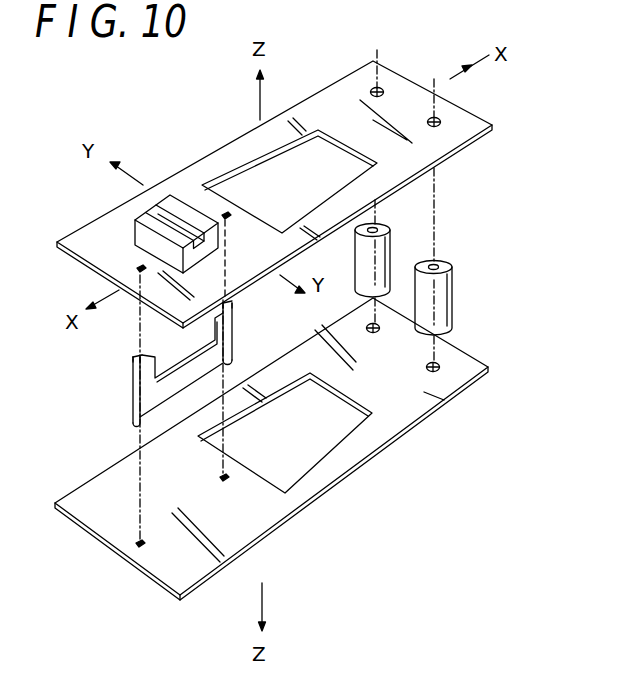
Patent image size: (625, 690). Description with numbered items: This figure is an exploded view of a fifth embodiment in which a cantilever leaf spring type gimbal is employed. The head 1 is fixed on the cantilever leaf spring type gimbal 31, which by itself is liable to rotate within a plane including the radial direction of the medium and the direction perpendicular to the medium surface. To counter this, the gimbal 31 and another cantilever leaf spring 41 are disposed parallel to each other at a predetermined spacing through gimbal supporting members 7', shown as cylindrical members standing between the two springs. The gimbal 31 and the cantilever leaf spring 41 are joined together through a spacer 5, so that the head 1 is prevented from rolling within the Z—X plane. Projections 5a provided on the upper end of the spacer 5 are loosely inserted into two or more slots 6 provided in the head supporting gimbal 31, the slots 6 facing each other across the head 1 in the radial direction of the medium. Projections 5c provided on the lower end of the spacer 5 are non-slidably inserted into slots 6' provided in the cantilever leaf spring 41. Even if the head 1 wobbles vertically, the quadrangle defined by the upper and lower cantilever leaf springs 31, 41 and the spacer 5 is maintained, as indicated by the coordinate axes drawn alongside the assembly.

The head 1 is at (133, 233).
The cantilever leaf spring type gimbal 31 is at (220, 157).
The cantilever leaf spring 41 is at (240, 536).
The spacer 5 is at (140, 398).
The projections 5a is at (232, 304).
The projections 5c is at (136, 426).
The slots 6 is at (129, 213).
The slots 6' is at (223, 544).
The gimbal supporting members 7' is at (425, 278).